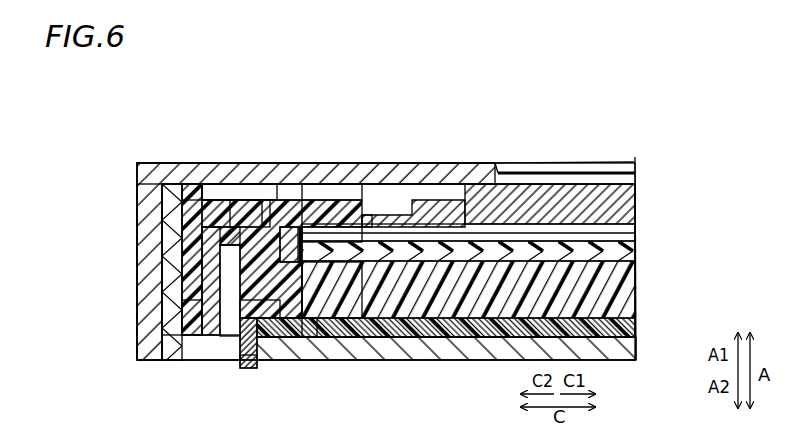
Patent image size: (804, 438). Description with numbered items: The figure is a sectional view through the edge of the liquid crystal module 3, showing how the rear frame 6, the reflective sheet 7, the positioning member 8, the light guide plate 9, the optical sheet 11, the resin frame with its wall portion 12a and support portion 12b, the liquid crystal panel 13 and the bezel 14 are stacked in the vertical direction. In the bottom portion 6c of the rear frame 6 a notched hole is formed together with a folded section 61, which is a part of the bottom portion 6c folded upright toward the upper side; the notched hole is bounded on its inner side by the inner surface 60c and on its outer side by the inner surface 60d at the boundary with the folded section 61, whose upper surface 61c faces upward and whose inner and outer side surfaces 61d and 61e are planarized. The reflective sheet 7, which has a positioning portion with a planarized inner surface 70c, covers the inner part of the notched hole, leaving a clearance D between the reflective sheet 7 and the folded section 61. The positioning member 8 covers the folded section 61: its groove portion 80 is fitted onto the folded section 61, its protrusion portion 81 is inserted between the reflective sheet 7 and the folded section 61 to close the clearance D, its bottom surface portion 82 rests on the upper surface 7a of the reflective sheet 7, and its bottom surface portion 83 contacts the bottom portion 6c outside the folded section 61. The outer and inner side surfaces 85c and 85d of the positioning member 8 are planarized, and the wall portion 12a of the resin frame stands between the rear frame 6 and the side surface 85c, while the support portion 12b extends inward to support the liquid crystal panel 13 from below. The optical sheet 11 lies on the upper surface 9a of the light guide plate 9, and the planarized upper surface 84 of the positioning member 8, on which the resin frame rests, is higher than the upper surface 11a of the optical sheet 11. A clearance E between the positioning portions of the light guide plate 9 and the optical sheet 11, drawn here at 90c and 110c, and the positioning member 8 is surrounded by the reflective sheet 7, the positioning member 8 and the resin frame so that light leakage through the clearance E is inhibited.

The liquid crystal module 3 is at (624, 140).
The rear frame 6 is at (162, 298).
The bottom portion 6c is at (625, 331).
The reflective sheet 7 is at (413, 340).
The upper surface 7a is at (625, 305).
The positioning member 8 is at (172, 265).
The light guide plate 9 is at (625, 282).
The upper surface 9a is at (625, 249).
The optical sheet 11 is at (550, 250).
The upper surface 11a is at (625, 233).
The wall portion 12a is at (185, 218).
The support portion 12b is at (393, 212).
The liquid crystal panel 13 is at (625, 210).
The bezel 14 is at (157, 171).
The inner surface 60c is at (327, 346).
The inner surface 60d is at (252, 330).
The folded section 61 is at (190, 286).
The upper surface 61c is at (233, 205).
The side surface 61d is at (213, 200).
The side surface 61e is at (252, 205).
The inner surface 70c is at (211, 334).
The groove portion 80 is at (185, 322).
The protrusion portion 81 is at (248, 368).
The bottom surface portion 82 is at (292, 356).
The bottom surface portion 83 is at (198, 338).
The upper surface 84 is at (185, 199).
The side surface 85c is at (205, 241).
The side surface 85d is at (320, 245).
The planarizing layer 90c is at (276, 205).
The bank layer 110c is at (289, 250).
The clearance D is at (240, 366).
The clearance E is at (368, 217).